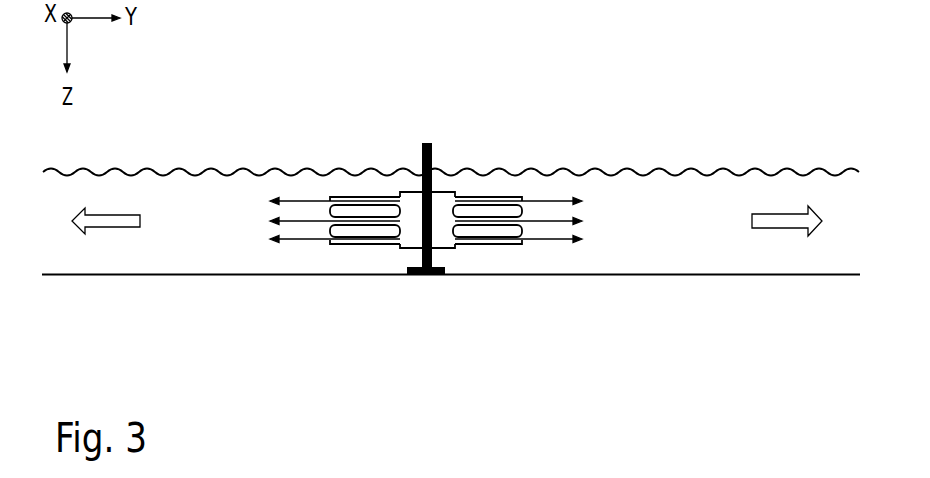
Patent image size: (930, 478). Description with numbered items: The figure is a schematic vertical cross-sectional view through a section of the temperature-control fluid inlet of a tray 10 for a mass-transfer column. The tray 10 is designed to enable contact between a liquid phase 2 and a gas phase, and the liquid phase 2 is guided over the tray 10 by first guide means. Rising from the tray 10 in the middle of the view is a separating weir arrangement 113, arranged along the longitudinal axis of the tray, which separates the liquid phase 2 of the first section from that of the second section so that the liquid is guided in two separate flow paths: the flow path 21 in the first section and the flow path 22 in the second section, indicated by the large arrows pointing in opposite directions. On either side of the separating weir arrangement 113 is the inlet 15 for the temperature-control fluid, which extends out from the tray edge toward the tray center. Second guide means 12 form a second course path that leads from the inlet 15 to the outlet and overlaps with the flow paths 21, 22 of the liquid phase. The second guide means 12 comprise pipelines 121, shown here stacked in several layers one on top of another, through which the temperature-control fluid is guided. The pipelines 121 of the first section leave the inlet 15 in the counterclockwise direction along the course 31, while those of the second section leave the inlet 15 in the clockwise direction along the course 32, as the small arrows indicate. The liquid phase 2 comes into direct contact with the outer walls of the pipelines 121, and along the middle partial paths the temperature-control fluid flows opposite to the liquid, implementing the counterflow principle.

The liquid phase 2 is at (182, 189).
The tray 10 is at (720, 276).
The separating weir arrangement 113 is at (422, 153).
The inlet 15 is at (442, 200).
The second guide means 12 is at (352, 186).
The pipelines 121 is at (352, 243).
The course 32 is at (303, 199).
The course 31 is at (545, 199).
The flow path 22 is at (110, 228).
The flow path 21 is at (783, 229).